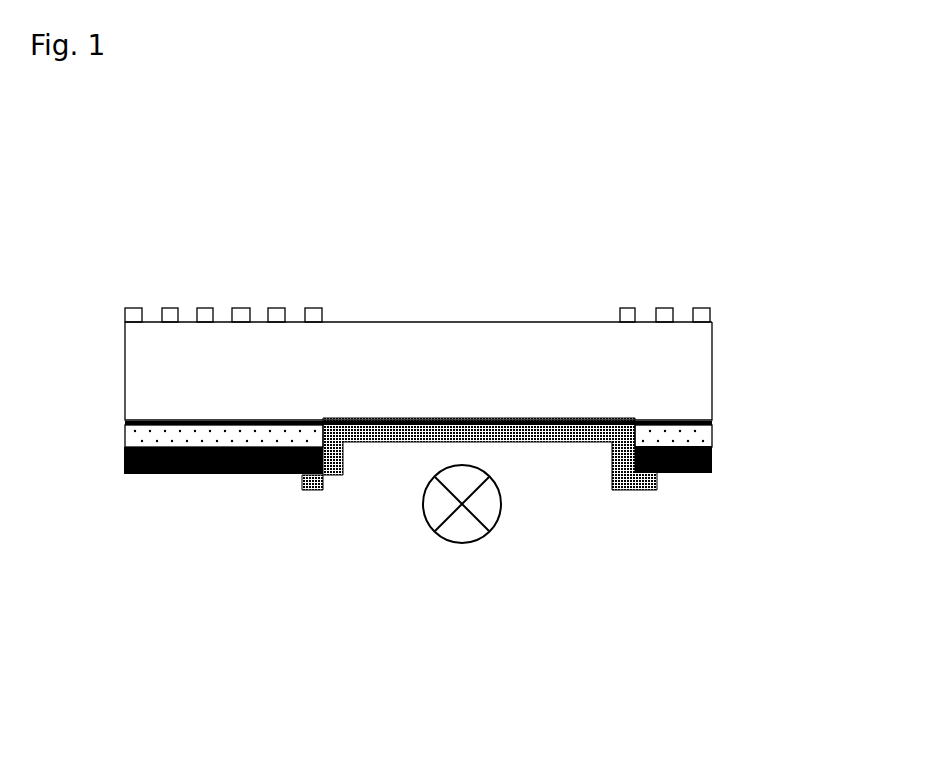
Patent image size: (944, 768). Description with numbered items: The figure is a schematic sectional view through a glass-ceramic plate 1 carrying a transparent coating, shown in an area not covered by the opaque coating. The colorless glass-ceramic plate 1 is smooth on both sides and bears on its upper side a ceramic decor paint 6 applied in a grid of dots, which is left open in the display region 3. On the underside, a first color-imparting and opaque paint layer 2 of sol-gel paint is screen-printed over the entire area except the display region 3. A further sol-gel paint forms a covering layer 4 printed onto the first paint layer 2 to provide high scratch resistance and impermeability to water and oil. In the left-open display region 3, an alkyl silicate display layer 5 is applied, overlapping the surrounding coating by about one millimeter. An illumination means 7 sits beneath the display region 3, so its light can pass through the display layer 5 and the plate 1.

The glass-ceramic plate 1 is at (714, 373).
The color-imparting opaque paint layer 2 is at (714, 435).
The display region 3 is at (467, 310).
The covering layer 4 is at (712, 462).
The display layer 5 is at (650, 487).
The ceramic decor paint 6 is at (628, 306).
The illumination means 7 is at (492, 550).